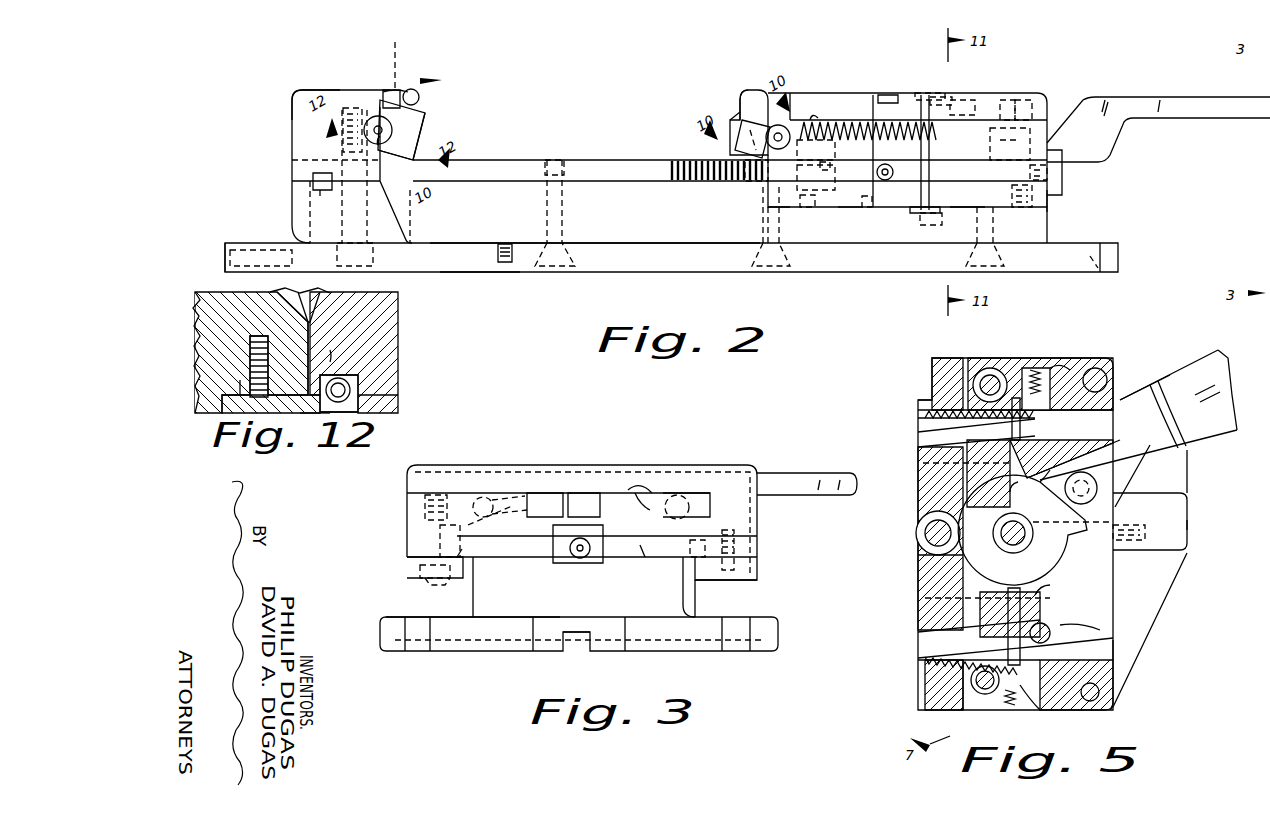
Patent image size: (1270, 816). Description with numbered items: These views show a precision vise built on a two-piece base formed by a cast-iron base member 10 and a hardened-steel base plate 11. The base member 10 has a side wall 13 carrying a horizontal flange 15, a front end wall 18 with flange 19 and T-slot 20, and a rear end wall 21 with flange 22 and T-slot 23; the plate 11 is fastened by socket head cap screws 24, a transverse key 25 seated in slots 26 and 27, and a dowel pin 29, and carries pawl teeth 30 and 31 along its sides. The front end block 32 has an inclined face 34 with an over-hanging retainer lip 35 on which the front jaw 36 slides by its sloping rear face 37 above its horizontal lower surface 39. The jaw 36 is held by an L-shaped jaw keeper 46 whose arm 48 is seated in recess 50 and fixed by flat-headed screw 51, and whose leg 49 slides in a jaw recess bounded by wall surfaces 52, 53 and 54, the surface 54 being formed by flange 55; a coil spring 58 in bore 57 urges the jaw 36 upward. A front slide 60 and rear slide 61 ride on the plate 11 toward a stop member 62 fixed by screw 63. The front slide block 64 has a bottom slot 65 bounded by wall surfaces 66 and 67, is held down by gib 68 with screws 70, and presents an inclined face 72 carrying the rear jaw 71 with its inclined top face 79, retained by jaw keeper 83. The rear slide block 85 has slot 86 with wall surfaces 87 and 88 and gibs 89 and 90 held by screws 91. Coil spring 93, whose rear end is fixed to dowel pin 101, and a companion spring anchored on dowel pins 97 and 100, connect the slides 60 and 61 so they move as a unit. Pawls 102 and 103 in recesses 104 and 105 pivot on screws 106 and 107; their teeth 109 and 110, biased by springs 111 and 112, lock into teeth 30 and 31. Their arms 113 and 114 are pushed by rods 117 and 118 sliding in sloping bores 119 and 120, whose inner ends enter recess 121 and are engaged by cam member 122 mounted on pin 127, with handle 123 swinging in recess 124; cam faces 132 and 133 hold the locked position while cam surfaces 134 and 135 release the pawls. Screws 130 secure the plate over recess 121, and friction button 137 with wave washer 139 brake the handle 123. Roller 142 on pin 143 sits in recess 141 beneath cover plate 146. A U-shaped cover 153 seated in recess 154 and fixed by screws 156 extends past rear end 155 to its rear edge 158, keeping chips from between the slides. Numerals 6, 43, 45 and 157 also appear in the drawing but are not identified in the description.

In FIG. 2, the spring seat 6 is at (826, 166).
In FIG. 2, the base member 10 is at (478, 272).
In FIG. 3, the base member 10 is at (380, 620).
In FIG. 5, the base member 10 is at (1140, 648).
In FIG. 2, the base plate 11 is at (515, 160).
In FIG. 3, the base plate 11 is at (540, 557).
In FIG. 5, the base plate 11 is at (925, 440).
In FIG. 2, the side wall 13 is at (654, 243).
In FIG. 2, the horizontal flange 15 is at (720, 273).
In FIG. 2, the front end wall 18 is at (292, 208).
In FIG. 2, the horizontal flange 19 is at (232, 241).
In FIG. 2, the T-slot 20 is at (230, 254).
In FIG. 2, the rear end wall 21 is at (1040, 227).
In FIG. 3, the rear end wall 21 is at (482, 597).
In FIG. 2, the horizontal flange 22 is at (1106, 243).
In FIG. 3, the horizontal flange 22 is at (545, 640).
In FIG. 5, the horizontal flange 22 is at (1170, 610).
In FIG. 2, the T-slot 23 is at (1112, 260).
In FIG. 3, the T-slot 23 is at (588, 636).
In FIG. 5, the T-slot 23 is at (1180, 538).
In FIG. 2, the socket head cap screws 24 is at (560, 216).
In FIG. 2, the key 25 is at (313, 183).
In FIG. 2, the slot 26 is at (323, 174).
In FIG. 2, the slot 27 is at (322, 192).
In FIG. 3, the dowel pin 29 is at (640, 556).
In FIG. 2, the pawl teeth 30 is at (696, 181).
In FIG. 3, the pawl teeth 30 is at (460, 546).
In FIG. 5, the pawl teeth 30 is at (925, 665).
In FIG. 3, the pawl teeth 31 is at (698, 547).
In FIG. 5, the pawl teeth 31 is at (925, 420).
In FIG. 2, the front end block 32 is at (290, 102).
In FIG. 12, the front end block 32 is at (214, 293).
In FIG. 2, the inclined front face 34 is at (412, 120).
In FIG. 12, the inclined front face 34 is at (300, 315).
In FIG. 2, the retainer lip 35 is at (405, 90).
In FIG. 2, the front vise jaw 36 is at (432, 130).
In FIG. 12, the front vise jaw 36 is at (398, 347).
In FIG. 2, the rear face 37 is at (384, 92).
In FIG. 12, the rear face 37 is at (300, 295).
In FIG. 2, the lower surface 39 is at (420, 160).
In FIG. 2, the hook 43 is at (416, 84).
In FIG. 2, the pivot axis 45 is at (390, 60).
In FIG. 2, the jaw keeper 46 is at (378, 115).
In FIG. 12, the jaw keeper 46 is at (240, 405).
In FIG. 12, the arm 48 is at (290, 385).
In FIG. 12, the jaw retaining and guiding leg 49 is at (350, 413).
In FIG. 2, the recess 50 is at (392, 140).
In FIG. 12, the recess 50 is at (240, 390).
In FIG. 2, the flat-headed screw 51 is at (350, 134).
In FIG. 12, the flat-headed screw 51 is at (246, 352).
In FIG. 12, the wall surface 52 is at (360, 386).
In FIG. 12, the wall surface 53 is at (350, 378).
In FIG. 12, the recess surface 54 is at (320, 413).
In FIG. 12, the flange 55 is at (330, 355).
In FIG. 12, the bore 57 is at (346, 394).
In FIG. 2, the coil spring 58 is at (752, 182).
In FIG. 12, the coil spring 58 is at (370, 403).
In FIG. 2, the front slide 60 is at (846, 214).
In FIG. 5, the front slide 60 is at (915, 588).
In FIG. 2, the rear slide 61 is at (965, 212).
In FIG. 2, the stop member 62 is at (1062, 162).
In FIG. 3, the stop member 62 is at (604, 533).
In FIG. 5, the stop member 62 is at (1125, 516).
In FIG. 2, the flat-headed screw 63 is at (1062, 177).
In FIG. 3, the flat-headed screw 63 is at (576, 554).
In FIG. 5, the flat-headed screw 63 is at (1146, 540).
In FIG. 2, the front slide block 64 is at (824, 184).
In FIG. 5, the front slide block 64 is at (945, 360).
In FIG. 2, the slot 65 is at (838, 158).
In FIG. 5, the slot wall surface 66 is at (925, 692).
In FIG. 5, the slot wall surface 67 is at (935, 390).
In FIG. 2, the gib 68 is at (764, 208).
In FIG. 2, the flat-headed screws 70 is at (806, 206).
In FIG. 2, the rear vise jaw 71 is at (722, 110).
In FIG. 2, the inclined front face 72 is at (750, 90).
In FIG. 2, the inclined top face 79 is at (740, 100).
In FIG. 2, the jaw keeper 83 is at (762, 118).
In FIG. 2, the rear slide block 85 is at (1035, 140).
In FIG. 3, the rear slide block 85 is at (758, 528).
In FIG. 5, the rear slide block 85 is at (1095, 368).
In FIG. 3, the slot 86 is at (510, 536).
In FIG. 3, the slot wall surface 87 is at (458, 556).
In FIG. 5, the slot wall surface 87 is at (1085, 655).
In FIG. 3, the slot wall surface 88 is at (690, 580).
In FIG. 5, the slot wall surface 88 is at (1128, 396).
In FIG. 2, the gib 89 is at (1048, 200).
In FIG. 3, the gib 89 is at (407, 570).
In FIG. 3, the gib 90 is at (760, 570).
In FIG. 2, the flat-headed screws 91 is at (1014, 197).
In FIG. 3, the flat-headed screws 91 is at (740, 582).
In FIG. 5, the flat-headed screws 91 is at (1103, 366).
In FIG. 2, the coil spring 93 is at (860, 97).
In FIG. 2, the dowel pin 97 is at (818, 118).
In FIG. 3, the dowel pin 100 is at (680, 498).
In FIG. 2, the dowel pin 101 is at (975, 106).
In FIG. 3, the dowel pin 101 is at (482, 496).
In FIG. 5, the pawl 102 is at (986, 698).
In FIG. 5, the pawl 103 is at (1012, 384).
In FIG. 5, the recess 104 is at (1045, 702).
In FIG. 5, the recess 105 is at (1062, 362).
In FIG. 2, the round-head socket screw 106 is at (930, 228).
In FIG. 3, the round-head socket screw 106 is at (432, 584).
In FIG. 5, the round-head socket screw 106 is at (960, 706).
In FIG. 5, the round-head socket screw 107 is at (992, 378).
In FIG. 5, the pawl teeth 109 is at (1052, 631).
In FIG. 5, the pawl teeth 110 is at (1068, 452).
In FIG. 5, the coil spring 111 is at (1012, 706).
In FIG. 5, the coil spring 112 is at (1036, 372).
In FIG. 5, the upwardly extended arm 113 is at (1055, 682).
In FIG. 5, the upwardly extended arm 114 is at (1040, 395).
In FIG. 3, the pawl actuating push rod 117 is at (510, 500).
In FIG. 5, the pawl actuating push rod 117 is at (1000, 650).
In FIG. 3, the pawl actuating push rod 118 is at (640, 497).
In FIG. 5, the pawl actuating push rod 118 is at (976, 418).
In FIG. 5, the sloping bore 119 is at (1020, 600).
In FIG. 5, the sloping bore 120 is at (1015, 445).
In FIG. 5, the semi-circular recess 121 is at (996, 512).
In FIG. 3, the cam member 122 is at (548, 500).
In FIG. 5, the cam member 122 is at (1045, 565).
In FIG. 2, the handle 123 is at (1232, 120).
In FIG. 3, the handle 123 is at (800, 480).
In FIG. 5, the handle 123 is at (1210, 384).
In FIG. 3, the rectangular recess 124 is at (428, 502).
In FIG. 5, the rectangular recess 124 is at (1102, 632).
In FIG. 3, the pin 127 is at (588, 478).
In FIG. 5, the pin 127 is at (1002, 550).
In FIG. 5, the round-head socket screws 130 is at (1060, 470).
In FIG. 5, the arcuate cam face 132 is at (1010, 488).
In FIG. 5, the arcuate cam face 133 is at (1058, 590).
In FIG. 5, the cam surface 134 is at (1019, 579).
In FIG. 5, the cam surface 135 is at (1051, 482).
In FIG. 2, the friction button 137 is at (1025, 120).
In FIG. 5, the friction button 137 is at (1098, 486).
In FIG. 2, the wave washer 139 is at (1010, 146).
In FIG. 5, the recess 141 is at (916, 520).
In FIG. 5, the roller member 142 is at (924, 556).
In FIG. 5, the vertical pin 143 is at (925, 540).
In FIG. 2, the cover plate 146 is at (832, 100).
In FIG. 2, the U-shaped cover 153 is at (932, 72).
In FIG. 3, the U-shaped cover 153 is at (636, 468).
In FIG. 2, the recess 154 is at (886, 95).
In FIG. 2, the rear end 155 is at (936, 100).
In FIG. 2, the screws 156 is at (924, 96).
In FIG. 2, the spacer 157 is at (868, 208).
In FIG. 2, the rear edge 158 is at (956, 106).